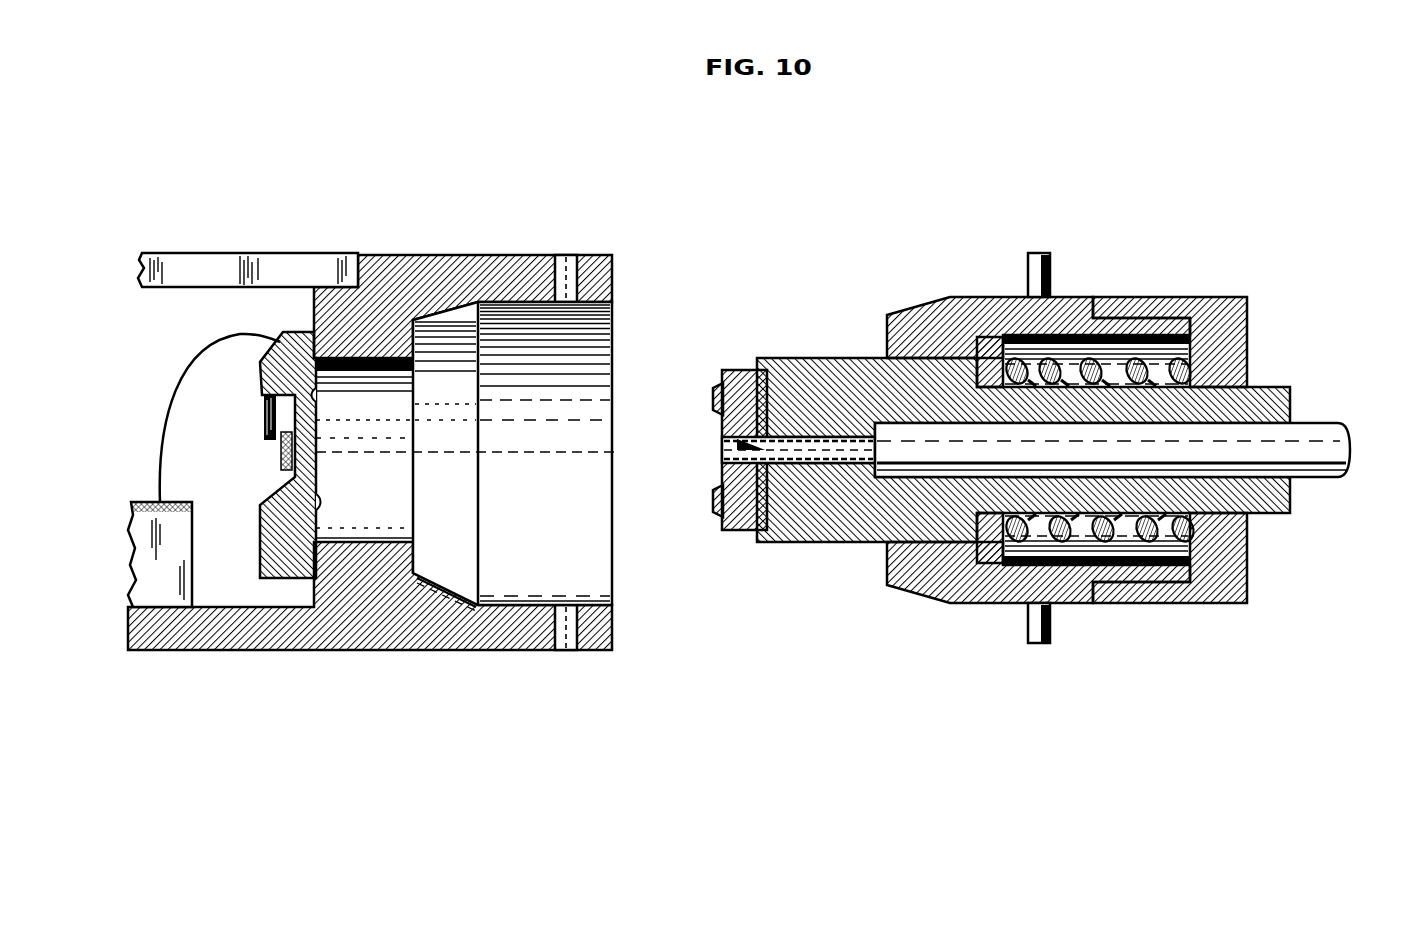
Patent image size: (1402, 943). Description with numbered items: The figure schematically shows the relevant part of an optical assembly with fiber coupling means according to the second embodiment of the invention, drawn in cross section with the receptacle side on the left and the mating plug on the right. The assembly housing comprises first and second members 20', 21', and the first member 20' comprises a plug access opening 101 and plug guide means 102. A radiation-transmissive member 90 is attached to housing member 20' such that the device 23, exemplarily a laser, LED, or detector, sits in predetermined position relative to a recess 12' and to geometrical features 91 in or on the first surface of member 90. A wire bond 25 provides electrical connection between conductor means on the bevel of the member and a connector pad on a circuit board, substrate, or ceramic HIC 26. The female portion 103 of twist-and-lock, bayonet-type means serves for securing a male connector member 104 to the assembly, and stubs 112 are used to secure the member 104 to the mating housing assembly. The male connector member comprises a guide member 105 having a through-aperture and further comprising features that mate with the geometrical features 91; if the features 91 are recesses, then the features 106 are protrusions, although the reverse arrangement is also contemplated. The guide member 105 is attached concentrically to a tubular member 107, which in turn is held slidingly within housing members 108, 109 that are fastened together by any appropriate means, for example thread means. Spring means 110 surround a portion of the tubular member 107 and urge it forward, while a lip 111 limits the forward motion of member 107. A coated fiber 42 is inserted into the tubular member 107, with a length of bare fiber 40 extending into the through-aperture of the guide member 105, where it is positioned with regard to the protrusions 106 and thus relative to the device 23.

The first housing member 20' is at (370, 483).
The second housing member 21' is at (248, 241).
The wire bond 25 is at (157, 432).
The ceramic HIC 26 is at (148, 558).
The recess 12' is at (239, 417).
The device 23 is at (270, 458).
The radiation-transmissive member 90 is at (278, 548).
The geometrical features 91 is at (315, 397).
The plug access opening 101 is at (412, 374).
The plug guide means 102 is at (455, 577).
The female portion of twist-and-lock means 103 is at (561, 252).
The male connector member 104 is at (1014, 461).
The guide member 105 is at (738, 368).
The protrusions 106 is at (718, 392).
The tubular member 107 is at (822, 546).
The housing member 108 is at (918, 590).
The housing member 109 is at (1220, 605).
The spring means 110 is at (1235, 525).
The lip 111 is at (997, 345).
The stubs 112 is at (1050, 270).
The bare fiber 40 is at (740, 452).
The coated fiber 42 is at (1347, 440).